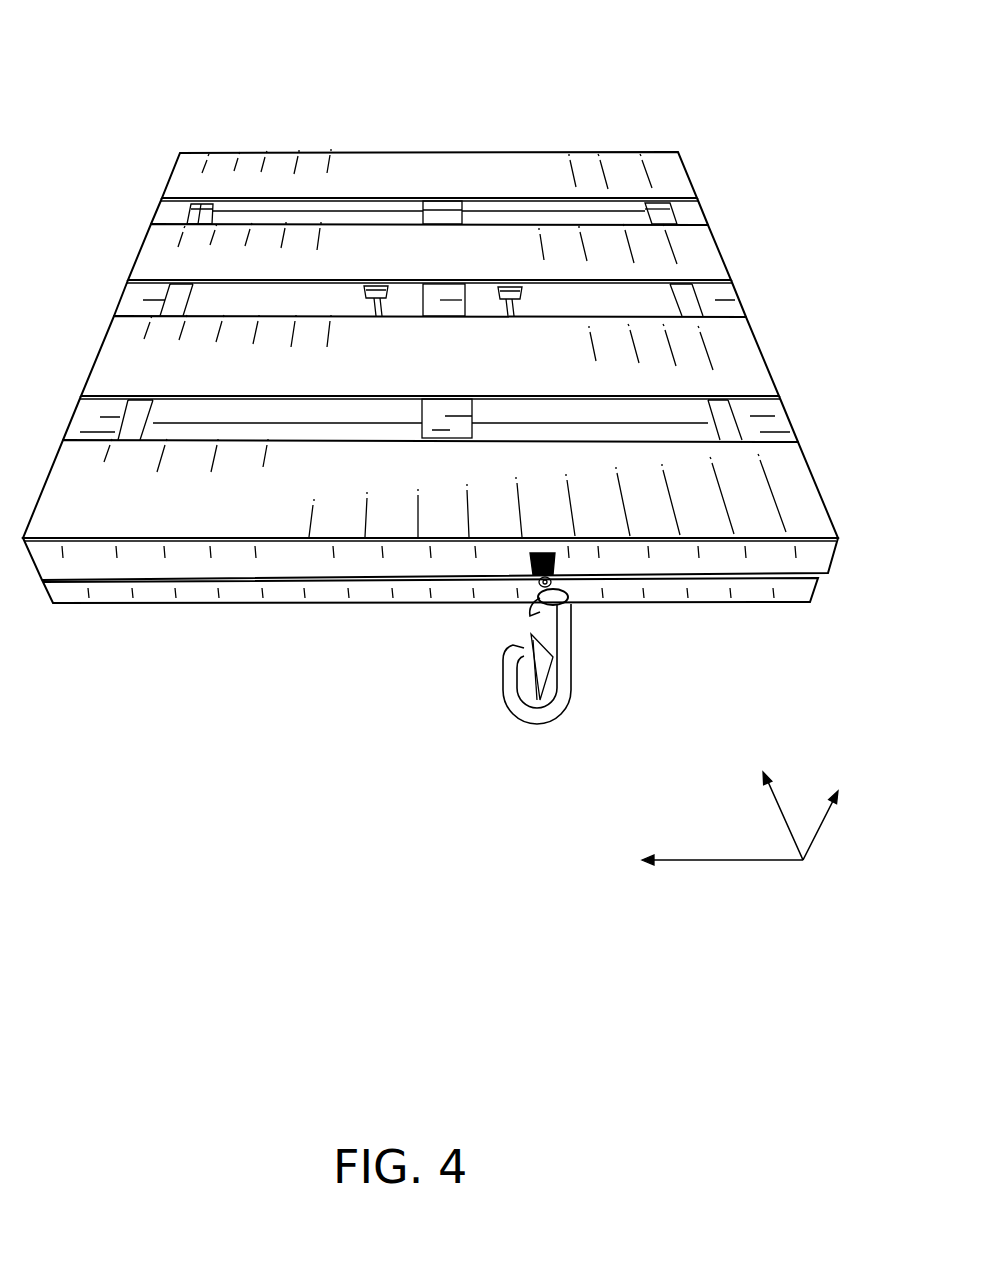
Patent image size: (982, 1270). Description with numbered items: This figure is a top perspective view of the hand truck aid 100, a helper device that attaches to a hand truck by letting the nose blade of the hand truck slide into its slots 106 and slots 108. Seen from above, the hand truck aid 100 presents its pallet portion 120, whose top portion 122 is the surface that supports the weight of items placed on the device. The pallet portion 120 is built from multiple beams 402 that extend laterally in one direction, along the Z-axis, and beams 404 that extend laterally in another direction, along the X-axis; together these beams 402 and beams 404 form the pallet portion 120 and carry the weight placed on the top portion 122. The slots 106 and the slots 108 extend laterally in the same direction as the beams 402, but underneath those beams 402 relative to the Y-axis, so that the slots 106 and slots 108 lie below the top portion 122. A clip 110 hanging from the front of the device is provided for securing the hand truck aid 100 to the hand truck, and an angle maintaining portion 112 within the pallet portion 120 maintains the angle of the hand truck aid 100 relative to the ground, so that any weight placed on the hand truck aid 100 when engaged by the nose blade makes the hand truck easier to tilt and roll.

The hand truck aid 100 is at (792, 21).
The slots 106 is at (822, 580).
The slots 108 is at (680, 410).
The clip 110 is at (562, 712).
The angle maintaining portion 112 is at (513, 303).
The pallet portion 120 is at (550, 151).
The top portion 122 is at (428, 248).
The beams 402 is at (675, 173).
The beams 404 is at (130, 297).